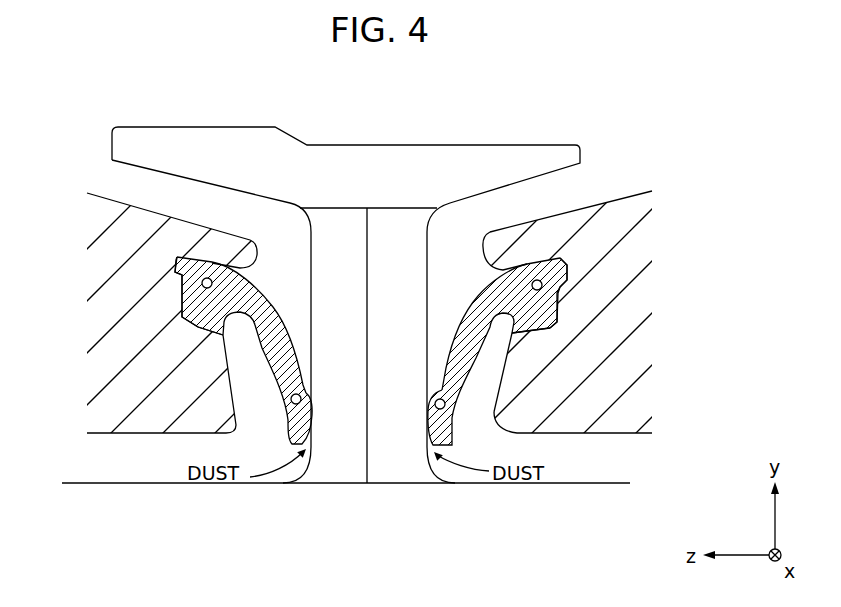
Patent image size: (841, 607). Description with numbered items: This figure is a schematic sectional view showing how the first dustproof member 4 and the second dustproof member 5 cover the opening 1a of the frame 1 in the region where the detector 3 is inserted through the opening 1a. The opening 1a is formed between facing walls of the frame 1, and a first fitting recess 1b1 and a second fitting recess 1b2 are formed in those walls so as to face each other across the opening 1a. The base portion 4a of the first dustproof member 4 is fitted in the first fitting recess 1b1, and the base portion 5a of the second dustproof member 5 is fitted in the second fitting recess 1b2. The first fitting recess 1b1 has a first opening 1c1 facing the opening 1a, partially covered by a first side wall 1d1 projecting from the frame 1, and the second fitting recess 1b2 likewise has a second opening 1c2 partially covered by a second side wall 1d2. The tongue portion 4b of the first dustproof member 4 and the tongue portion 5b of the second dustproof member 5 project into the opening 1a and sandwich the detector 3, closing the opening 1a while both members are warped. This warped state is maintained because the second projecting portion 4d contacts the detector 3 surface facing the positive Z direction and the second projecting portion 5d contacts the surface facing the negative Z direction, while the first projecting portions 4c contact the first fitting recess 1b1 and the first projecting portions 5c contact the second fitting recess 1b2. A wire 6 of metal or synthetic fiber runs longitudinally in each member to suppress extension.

The frame 1 is at (420, 310).
The opening 1a is at (492, 420).
The first fitting recess 1b1 is at (177, 257).
The second fitting recess 1b2 is at (563, 257).
The first opening 1c1 is at (257, 262).
The second opening 1c2 is at (487, 262).
The first side wall 1d1 is at (252, 330).
The second side wall 1d2 is at (487, 337).
The detector 3 is at (416, 157).
The first dustproof member 4 is at (253, 307).
The base portion 4a is at (182, 312).
The tongue portion 4b is at (293, 340).
The first projecting portions 4c is at (207, 261).
The second projecting portion 4d is at (311, 400).
The second dustproof member 5 is at (498, 356).
The base portion 5a is at (560, 297).
The tongue portion 5b is at (444, 363).
The first projecting portions 5c is at (534, 263).
The second projecting portion 5d is at (427, 412).
The core hole 6 is at (212, 283).